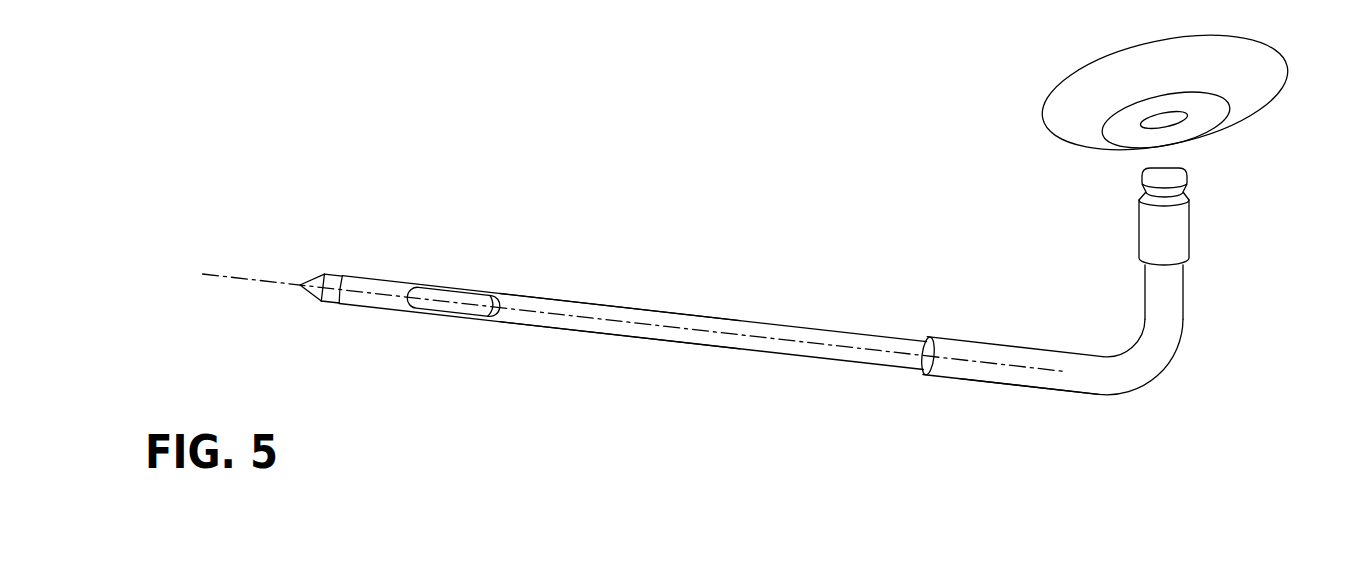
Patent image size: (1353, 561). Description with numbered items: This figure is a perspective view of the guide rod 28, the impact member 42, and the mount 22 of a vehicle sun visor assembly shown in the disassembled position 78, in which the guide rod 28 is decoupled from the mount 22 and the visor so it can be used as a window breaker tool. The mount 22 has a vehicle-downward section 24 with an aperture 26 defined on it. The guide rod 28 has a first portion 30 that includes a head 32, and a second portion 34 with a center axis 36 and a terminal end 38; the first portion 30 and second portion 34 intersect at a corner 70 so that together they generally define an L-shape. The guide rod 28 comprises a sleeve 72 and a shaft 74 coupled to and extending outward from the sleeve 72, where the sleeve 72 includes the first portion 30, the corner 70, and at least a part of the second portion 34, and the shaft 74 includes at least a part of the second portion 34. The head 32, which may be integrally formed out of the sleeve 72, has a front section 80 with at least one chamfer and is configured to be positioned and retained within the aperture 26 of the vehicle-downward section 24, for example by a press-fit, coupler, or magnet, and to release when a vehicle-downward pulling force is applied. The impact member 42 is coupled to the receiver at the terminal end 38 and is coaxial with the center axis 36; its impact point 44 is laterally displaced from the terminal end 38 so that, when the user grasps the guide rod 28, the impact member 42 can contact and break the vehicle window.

The mount 22 is at (1245, 80).
The vehicle-downward section 24 is at (1198, 135).
The aperture 26 is at (1143, 122).
The guide rod 28 is at (772, 320).
The first portion 30 is at (1183, 307).
The head 32 is at (1190, 242).
The second portion 34 is at (812, 355).
The center axis 36 is at (545, 308).
The terminal end 38 is at (323, 302).
The impact member 42 is at (323, 273).
The impact point 44 is at (300, 285).
The corner 70 is at (1153, 377).
The sleeve 72 is at (1030, 387).
The shaft 74 is at (620, 307).
The disassembled position 78 is at (600, 333).
The front section 80 is at (1188, 190).